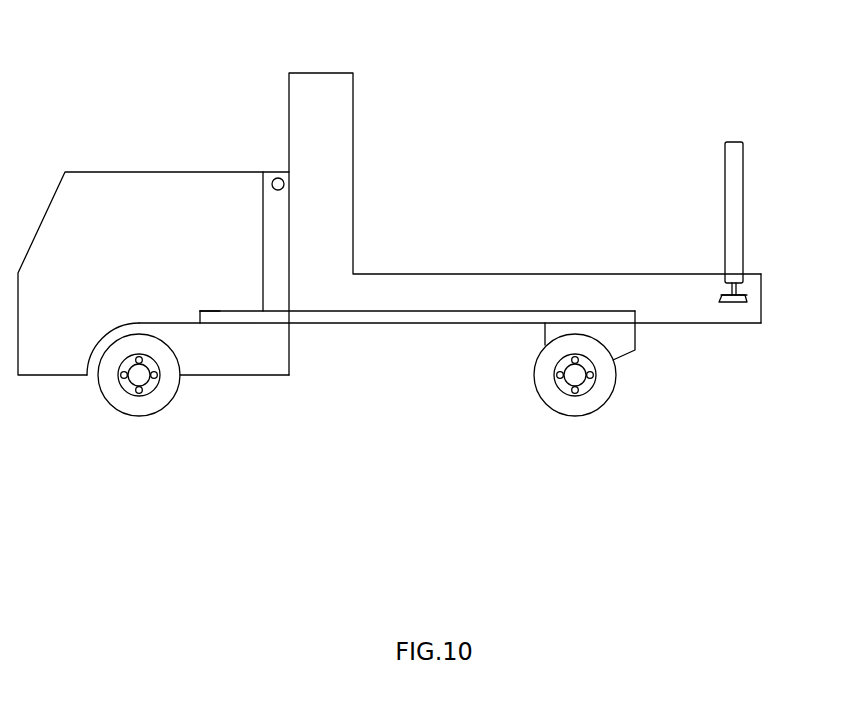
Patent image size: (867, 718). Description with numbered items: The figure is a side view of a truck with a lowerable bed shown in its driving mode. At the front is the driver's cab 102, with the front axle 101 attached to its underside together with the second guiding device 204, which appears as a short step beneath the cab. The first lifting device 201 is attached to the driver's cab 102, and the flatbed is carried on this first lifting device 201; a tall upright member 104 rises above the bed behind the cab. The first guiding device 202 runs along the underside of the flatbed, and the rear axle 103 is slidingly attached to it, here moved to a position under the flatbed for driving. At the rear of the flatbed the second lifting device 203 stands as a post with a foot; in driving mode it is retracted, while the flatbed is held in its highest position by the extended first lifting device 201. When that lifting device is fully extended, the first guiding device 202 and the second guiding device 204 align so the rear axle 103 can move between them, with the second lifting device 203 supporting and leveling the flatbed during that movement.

The front axle 101 is at (123, 416).
The driver's cab 102 is at (85, 172).
The rear axle 103 is at (557, 416).
The upright column 104 is at (322, 73).
The first lifting device 201 is at (278, 177).
The first guiding device 202 is at (433, 323).
The second lifting device 203 is at (732, 142).
The second guiding device 204 is at (203, 310).